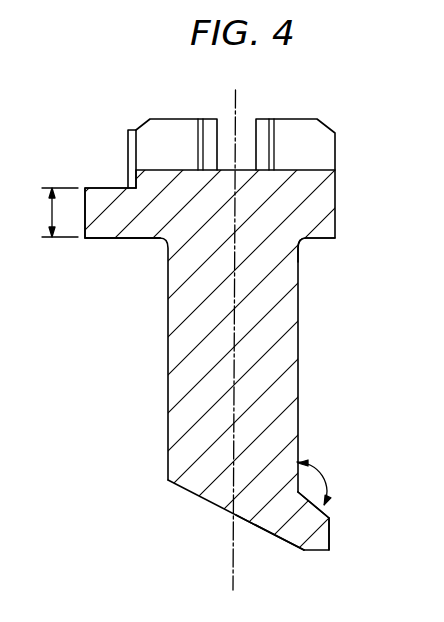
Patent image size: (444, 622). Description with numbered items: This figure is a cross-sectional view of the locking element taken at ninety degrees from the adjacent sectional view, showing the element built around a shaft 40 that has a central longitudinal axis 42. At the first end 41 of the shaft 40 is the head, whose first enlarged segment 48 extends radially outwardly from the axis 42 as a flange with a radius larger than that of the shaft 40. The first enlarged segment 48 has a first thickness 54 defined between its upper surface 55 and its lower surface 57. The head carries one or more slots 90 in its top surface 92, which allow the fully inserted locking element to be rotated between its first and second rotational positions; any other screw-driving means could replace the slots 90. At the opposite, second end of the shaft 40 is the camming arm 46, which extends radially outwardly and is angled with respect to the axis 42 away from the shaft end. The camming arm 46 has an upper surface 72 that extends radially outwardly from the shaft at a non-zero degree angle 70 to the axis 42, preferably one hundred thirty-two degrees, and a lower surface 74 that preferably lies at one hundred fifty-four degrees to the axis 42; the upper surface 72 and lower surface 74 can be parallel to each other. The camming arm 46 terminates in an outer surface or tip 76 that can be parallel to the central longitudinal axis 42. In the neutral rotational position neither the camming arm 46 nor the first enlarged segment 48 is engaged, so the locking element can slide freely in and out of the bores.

The shaft 40 is at (298, 338).
The first end 41 is at (298, 260).
The central longitudinal axis 42 is at (232, 530).
The camming arm 46 is at (300, 527).
The first enlarged segment 48 is at (102, 185).
The first thickness 54 is at (50, 213).
The upper surface 55 is at (122, 185).
The lower surface 57 is at (110, 238).
The non-zero degree angle 70 is at (325, 473).
The upper surface 72 is at (313, 493).
The lower surface 74 is at (267, 540).
The outer surface or tip 76 is at (330, 540).
The slot 90 is at (242, 125).
The top surface 92 is at (168, 118).